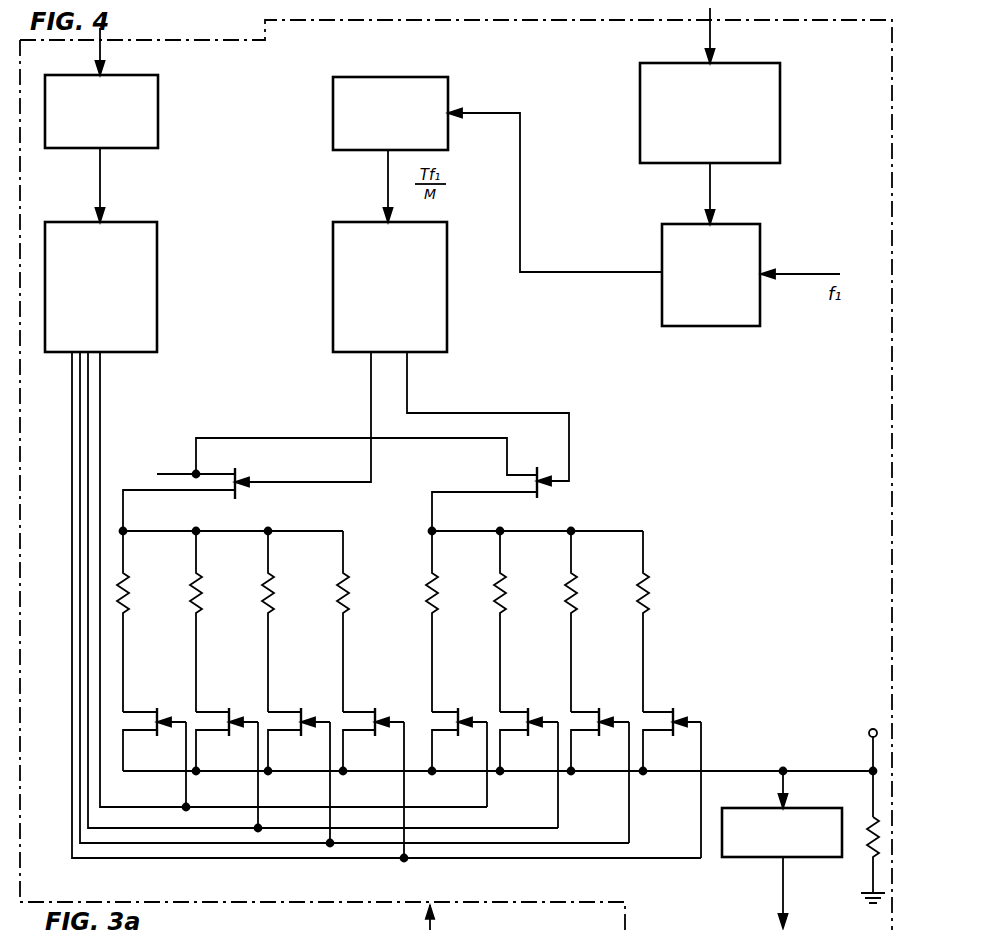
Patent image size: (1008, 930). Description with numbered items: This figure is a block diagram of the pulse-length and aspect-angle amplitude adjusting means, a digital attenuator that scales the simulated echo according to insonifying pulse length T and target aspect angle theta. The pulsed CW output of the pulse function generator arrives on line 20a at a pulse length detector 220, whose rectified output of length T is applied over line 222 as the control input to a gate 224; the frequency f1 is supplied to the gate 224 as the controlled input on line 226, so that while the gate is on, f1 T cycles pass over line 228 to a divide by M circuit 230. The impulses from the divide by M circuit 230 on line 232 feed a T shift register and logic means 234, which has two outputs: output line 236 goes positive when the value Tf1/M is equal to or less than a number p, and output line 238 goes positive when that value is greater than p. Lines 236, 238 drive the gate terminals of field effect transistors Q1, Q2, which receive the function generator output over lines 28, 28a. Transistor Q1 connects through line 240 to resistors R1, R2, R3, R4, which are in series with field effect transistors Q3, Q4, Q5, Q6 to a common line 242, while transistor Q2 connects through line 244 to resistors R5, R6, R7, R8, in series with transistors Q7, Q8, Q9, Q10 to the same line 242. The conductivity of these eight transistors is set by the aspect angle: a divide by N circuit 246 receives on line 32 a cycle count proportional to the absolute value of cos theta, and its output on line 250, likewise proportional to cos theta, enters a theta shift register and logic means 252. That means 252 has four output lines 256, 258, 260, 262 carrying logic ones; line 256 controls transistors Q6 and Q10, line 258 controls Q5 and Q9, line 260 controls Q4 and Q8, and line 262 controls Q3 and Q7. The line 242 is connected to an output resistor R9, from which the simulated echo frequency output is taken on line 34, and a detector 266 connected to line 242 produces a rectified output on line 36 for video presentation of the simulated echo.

The line 32 is at (104, 46).
The divide by N circuit 246 is at (158, 75).
The line 250 is at (102, 180).
The theta shift register and logic means 252 is at (157, 222).
The divide by M circuit 230 is at (458, 66).
The line 232 is at (386, 183).
The T shift register and logic means 234 is at (460, 210).
The line 228 is at (520, 210).
The line 20a is at (712, 33).
The pulse length detector 220 is at (780, 63).
The line 222 is at (712, 186).
The gate 224 is at (760, 224).
The line 226 is at (838, 259).
The output line 236 is at (369, 396).
The output line 238 is at (407, 400).
The line 28 is at (170, 473).
The line 28a is at (235, 438).
The line 240 is at (124, 515).
The line 244 is at (490, 490).
The output line 256 is at (72, 381).
The output line 258 is at (80, 408).
The output line 260 is at (88, 437).
The output line 262 is at (100, 467).
The line 242 is at (757, 763).
The line 34 is at (873, 752).
The detector 266 is at (736, 858).
The line 36 is at (780, 891).
The field effect transistor Q1 is at (247, 468).
The field effect transistor Q2 is at (540, 466).
The field effect transistor Q3 is at (172, 686).
The field effect transistor Q4 is at (244, 686).
The field effect transistor Q5 is at (316, 686).
The field effect transistor Q6 is at (390, 686).
The field effect transistor Q7 is at (473, 686).
The field effect transistor Q8 is at (543, 686).
The field effect transistor Q9 is at (614, 686).
The field effect transistor Q10 is at (688, 686).
The resistor R1 is at (131, 606).
The resistor R2 is at (204, 606).
The resistor R3 is at (276, 606).
The resistor R4 is at (351, 606).
The resistor R5 is at (440, 606).
The resistor R6 is at (508, 606).
The resistor R7 is at (579, 606).
The resistor R8 is at (651, 606).
The resistor R9 is at (866, 848).